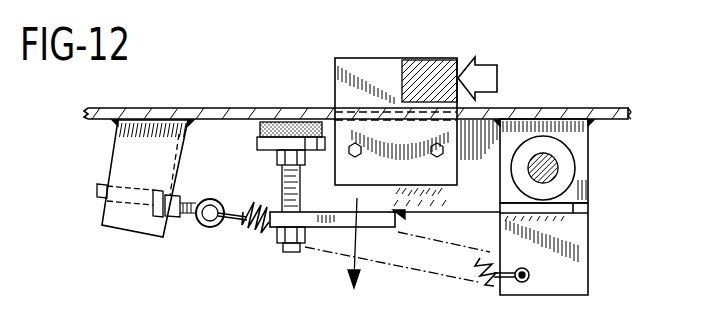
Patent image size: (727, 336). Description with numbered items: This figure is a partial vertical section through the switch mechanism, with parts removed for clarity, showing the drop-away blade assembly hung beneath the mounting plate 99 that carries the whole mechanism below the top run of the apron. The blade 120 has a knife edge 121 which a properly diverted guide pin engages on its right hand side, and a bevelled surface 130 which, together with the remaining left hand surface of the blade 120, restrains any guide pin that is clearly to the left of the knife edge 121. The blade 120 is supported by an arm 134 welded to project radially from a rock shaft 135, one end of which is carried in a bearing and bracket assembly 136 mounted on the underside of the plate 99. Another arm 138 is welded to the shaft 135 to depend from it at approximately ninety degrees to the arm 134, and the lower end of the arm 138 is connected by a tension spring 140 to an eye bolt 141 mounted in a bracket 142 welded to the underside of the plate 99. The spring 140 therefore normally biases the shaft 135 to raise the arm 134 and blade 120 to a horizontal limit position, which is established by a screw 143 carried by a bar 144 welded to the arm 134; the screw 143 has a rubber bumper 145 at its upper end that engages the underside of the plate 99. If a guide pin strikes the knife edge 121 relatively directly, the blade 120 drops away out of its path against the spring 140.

The mounting plate 99 is at (170, 108).
The blade 120 is at (368, 68).
The knife edge 121 is at (465, 58).
The bevelled surface 130 is at (420, 70).
The arm 134 is at (445, 197).
The rock shaft 135 is at (557, 178).
The bearing and bracket assembly 136 is at (548, 132).
The arm 138 is at (575, 244).
The tension spring 140 is at (478, 286).
The eye bolt 141 is at (199, 228).
The bracket 142 is at (112, 220).
The screw 143 is at (282, 183).
The bar 144 is at (320, 224).
The rubber bumper 145 is at (290, 122).